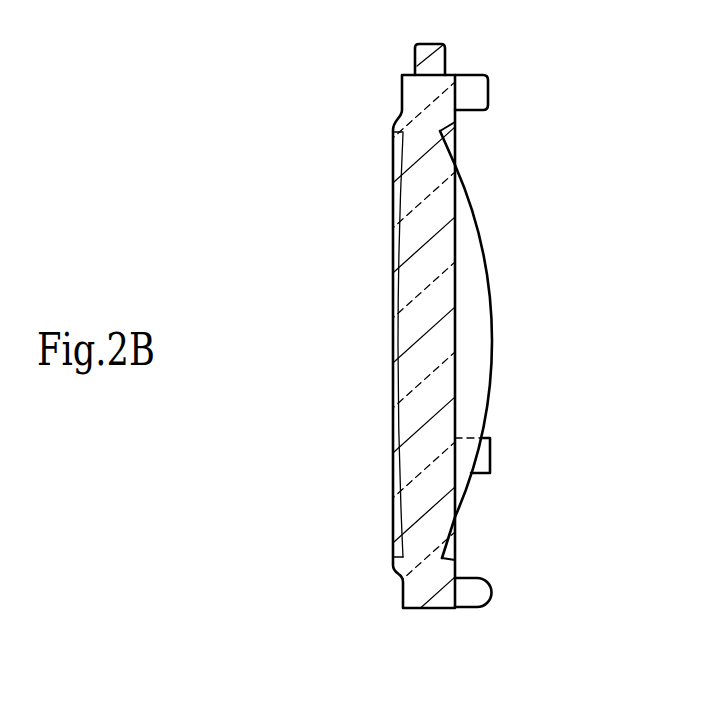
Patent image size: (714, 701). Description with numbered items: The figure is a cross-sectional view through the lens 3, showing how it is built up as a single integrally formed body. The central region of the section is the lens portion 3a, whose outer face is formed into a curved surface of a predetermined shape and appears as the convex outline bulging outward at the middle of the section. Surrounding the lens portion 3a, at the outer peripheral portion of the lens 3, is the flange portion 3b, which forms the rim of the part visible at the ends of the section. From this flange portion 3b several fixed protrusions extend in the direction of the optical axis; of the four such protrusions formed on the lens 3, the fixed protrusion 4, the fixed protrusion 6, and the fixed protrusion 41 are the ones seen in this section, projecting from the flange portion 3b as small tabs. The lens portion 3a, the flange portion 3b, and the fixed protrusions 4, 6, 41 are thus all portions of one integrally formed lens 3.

The lens 3 is at (533, 230).
The lens portion 3a is at (482, 316).
The flange portion 3b is at (442, 600).
The fixed protrusion 4 is at (470, 85).
The fixed protrusion 6 is at (485, 462).
The fixed protrusion 41 is at (480, 585).